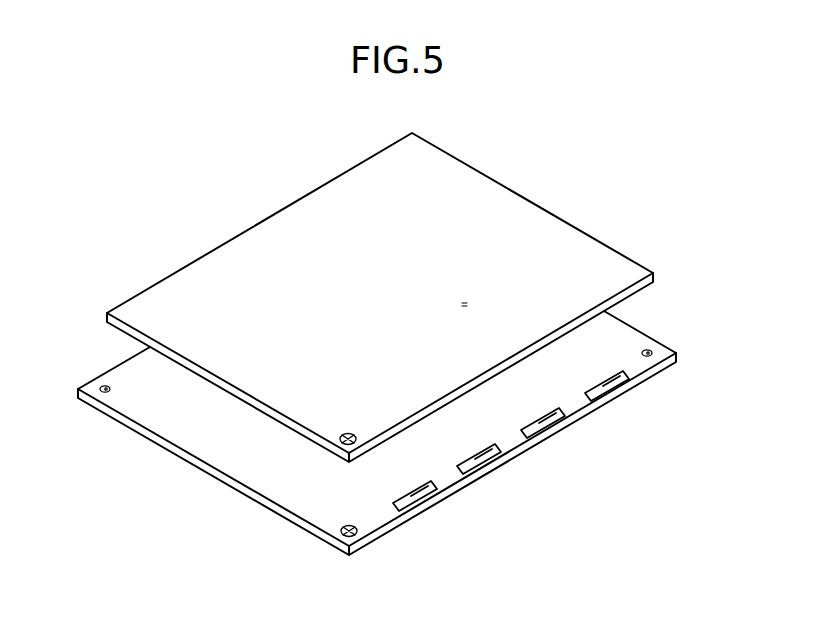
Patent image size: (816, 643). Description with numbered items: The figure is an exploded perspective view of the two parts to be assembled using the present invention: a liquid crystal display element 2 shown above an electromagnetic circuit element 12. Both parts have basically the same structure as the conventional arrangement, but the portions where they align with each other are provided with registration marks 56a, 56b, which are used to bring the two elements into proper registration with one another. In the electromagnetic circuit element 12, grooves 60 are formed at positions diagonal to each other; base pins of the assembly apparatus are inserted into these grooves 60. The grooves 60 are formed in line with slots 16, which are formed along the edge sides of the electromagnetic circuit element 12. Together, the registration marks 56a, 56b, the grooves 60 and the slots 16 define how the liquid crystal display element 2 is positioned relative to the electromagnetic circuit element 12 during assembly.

The liquid crystal display element 2 is at (278, 230).
The electromagnetic circuit element 12 is at (198, 443).
The grooves 60 is at (101, 387).
The slots 16 is at (425, 497).
The registration mark 56a is at (337, 443).
The registration mark 56b is at (339, 536).